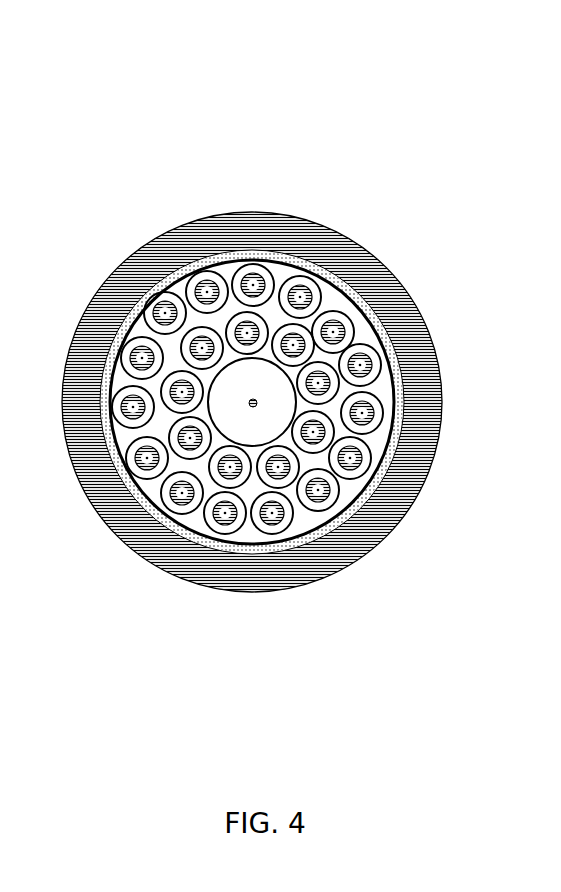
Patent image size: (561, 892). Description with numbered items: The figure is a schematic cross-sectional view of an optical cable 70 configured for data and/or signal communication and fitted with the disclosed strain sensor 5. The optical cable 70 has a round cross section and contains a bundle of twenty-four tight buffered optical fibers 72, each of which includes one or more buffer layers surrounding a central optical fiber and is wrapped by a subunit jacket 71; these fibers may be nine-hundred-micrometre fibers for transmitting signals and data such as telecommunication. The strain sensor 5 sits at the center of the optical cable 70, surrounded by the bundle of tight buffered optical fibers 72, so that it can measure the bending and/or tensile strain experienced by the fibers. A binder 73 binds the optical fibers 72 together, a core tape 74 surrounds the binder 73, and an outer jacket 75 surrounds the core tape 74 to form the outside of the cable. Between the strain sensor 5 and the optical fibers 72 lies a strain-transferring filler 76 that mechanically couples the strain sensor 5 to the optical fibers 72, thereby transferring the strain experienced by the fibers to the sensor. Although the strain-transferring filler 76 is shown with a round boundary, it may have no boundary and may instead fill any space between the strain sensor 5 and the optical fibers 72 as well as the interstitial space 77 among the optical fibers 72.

The optical cable 70 is at (227, 182).
The strain sensor 5 is at (258, 395).
The subunit jacket 71 is at (363, 345).
The tight buffered optical fibers 72 is at (370, 363).
The binder 73 is at (395, 420).
The core tape 74 is at (380, 475).
The outer jacket 75 is at (355, 543).
The strain-transferring filler 76 is at (240, 402).
The interstitial space 77 is at (173, 357).